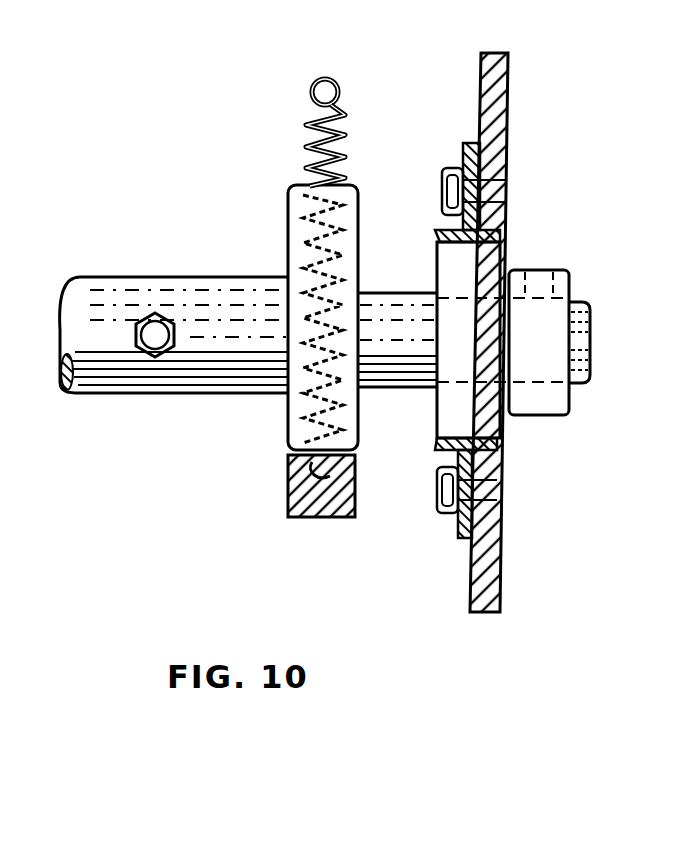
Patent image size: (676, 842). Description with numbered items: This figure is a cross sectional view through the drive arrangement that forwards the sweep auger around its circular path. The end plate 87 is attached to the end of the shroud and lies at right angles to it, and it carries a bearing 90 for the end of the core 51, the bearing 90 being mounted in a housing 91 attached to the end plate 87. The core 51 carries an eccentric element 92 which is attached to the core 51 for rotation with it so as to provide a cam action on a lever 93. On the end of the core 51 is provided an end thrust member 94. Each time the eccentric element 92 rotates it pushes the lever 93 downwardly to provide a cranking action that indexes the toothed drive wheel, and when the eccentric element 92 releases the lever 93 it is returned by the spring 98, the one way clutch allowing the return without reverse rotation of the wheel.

The core 51 is at (177, 283).
The end plate 87 is at (512, 120).
The bearing 90 is at (502, 256).
The housing 91 is at (457, 528).
The eccentric element 92 is at (287, 210).
The lever 93 is at (286, 481).
The end thrust member 94 is at (572, 280).
The spring 98 is at (307, 130).